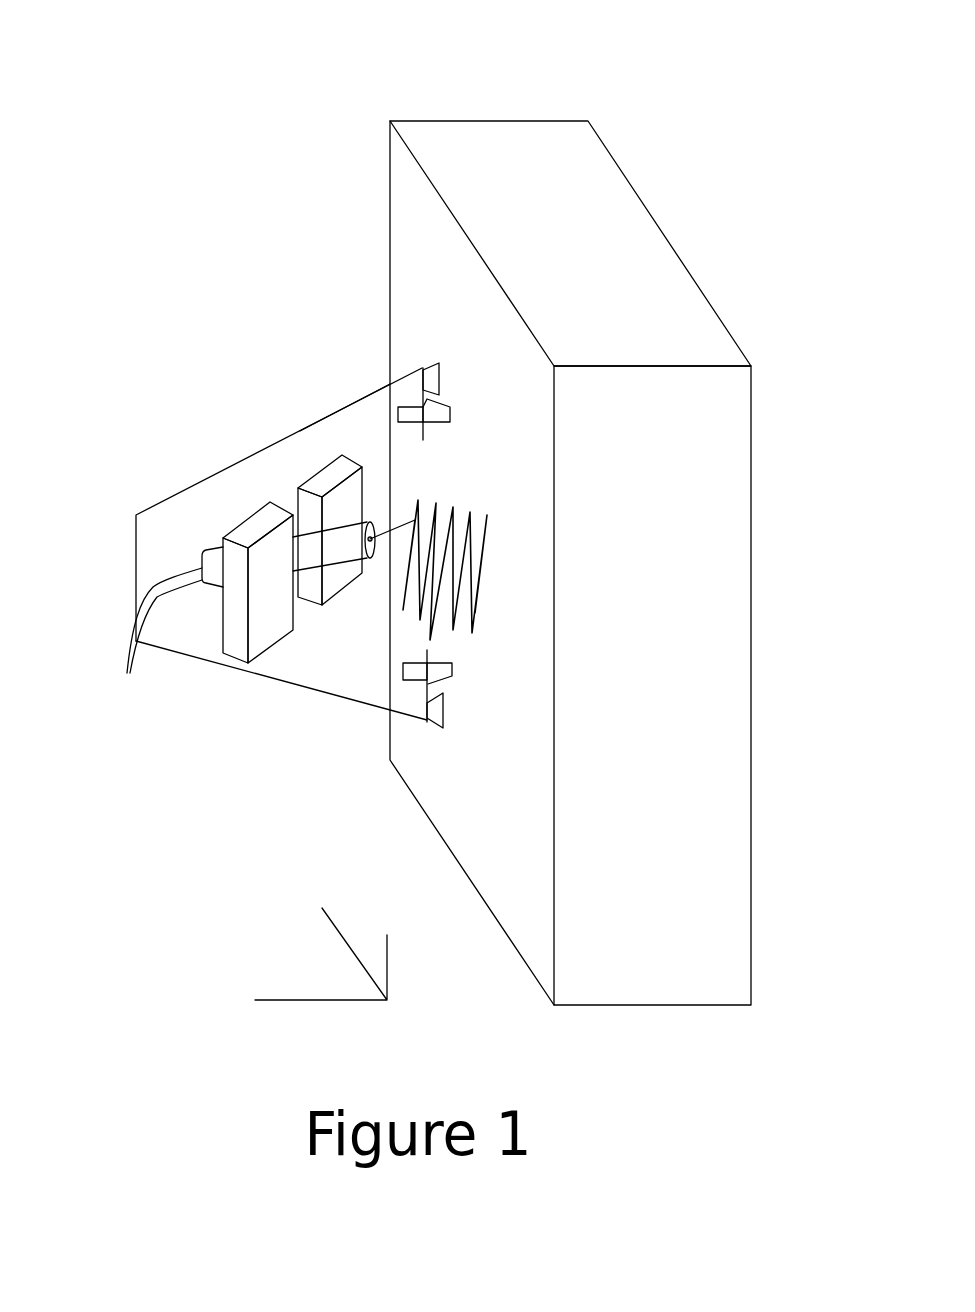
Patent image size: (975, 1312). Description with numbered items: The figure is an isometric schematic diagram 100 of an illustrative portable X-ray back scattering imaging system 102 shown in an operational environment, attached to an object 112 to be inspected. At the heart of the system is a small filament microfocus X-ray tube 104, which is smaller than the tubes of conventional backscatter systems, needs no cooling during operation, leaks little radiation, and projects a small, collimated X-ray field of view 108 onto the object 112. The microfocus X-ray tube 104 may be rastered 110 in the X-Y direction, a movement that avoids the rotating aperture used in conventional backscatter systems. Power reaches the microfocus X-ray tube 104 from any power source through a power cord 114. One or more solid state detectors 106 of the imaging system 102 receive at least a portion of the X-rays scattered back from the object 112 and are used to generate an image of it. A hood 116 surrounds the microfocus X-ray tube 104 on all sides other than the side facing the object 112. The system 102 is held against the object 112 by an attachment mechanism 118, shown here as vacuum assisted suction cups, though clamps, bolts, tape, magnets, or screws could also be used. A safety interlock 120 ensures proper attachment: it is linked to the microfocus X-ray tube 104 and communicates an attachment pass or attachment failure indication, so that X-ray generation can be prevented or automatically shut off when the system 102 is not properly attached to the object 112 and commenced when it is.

The isometric schematic diagram 100 is at (93, 37).
The portable X-ray back scattering imaging system 102 is at (145, 476).
The microfocus X-ray tube 104 is at (212, 547).
The solid state detectors 106 is at (317, 608).
The X-ray field of view 108 is at (393, 525).
The rastering 110 is at (452, 547).
The object 112 is at (390, 190).
The power cord 114 is at (153, 587).
The hood 116 is at (342, 408).
The attachment mechanism 118 is at (437, 364).
The safety interlock 120 is at (399, 407).